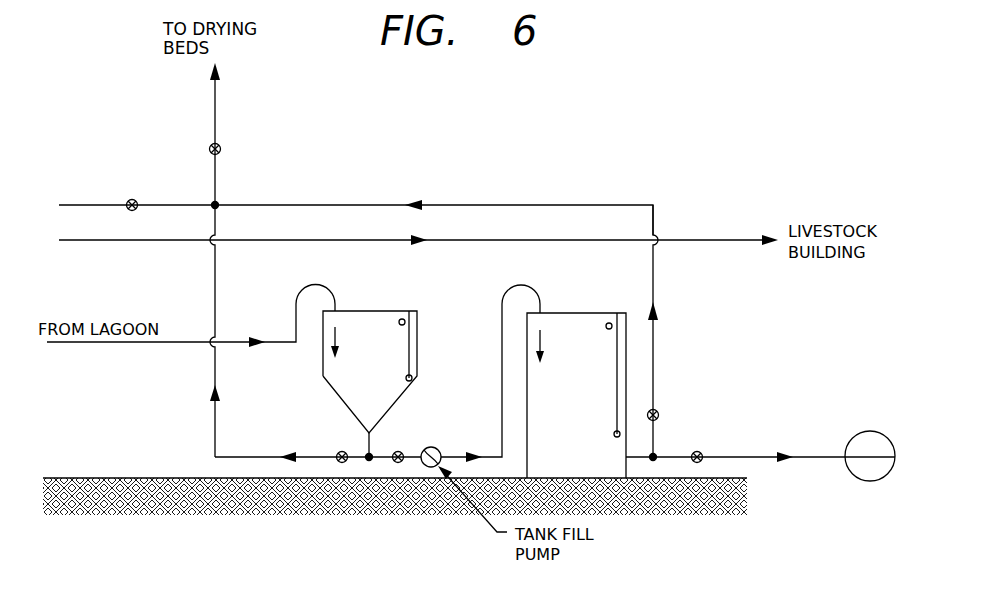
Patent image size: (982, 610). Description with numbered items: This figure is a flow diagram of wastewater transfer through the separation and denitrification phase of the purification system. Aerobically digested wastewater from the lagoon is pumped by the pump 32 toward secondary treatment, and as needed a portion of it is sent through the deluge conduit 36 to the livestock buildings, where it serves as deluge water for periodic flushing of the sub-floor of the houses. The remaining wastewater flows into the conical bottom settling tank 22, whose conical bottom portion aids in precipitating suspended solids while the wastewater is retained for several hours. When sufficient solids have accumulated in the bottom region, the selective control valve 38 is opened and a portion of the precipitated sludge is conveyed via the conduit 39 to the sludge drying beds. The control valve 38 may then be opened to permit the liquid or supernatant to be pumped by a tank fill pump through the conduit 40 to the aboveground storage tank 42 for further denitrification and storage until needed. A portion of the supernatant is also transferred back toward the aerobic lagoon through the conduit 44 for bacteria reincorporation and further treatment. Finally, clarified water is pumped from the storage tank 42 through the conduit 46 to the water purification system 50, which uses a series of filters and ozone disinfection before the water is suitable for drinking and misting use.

The conical bottom settling tank 22 is at (388, 379).
The pump 32 is at (120, 342).
The deluge conduit 36 is at (477, 241).
The selective control valve 38 is at (342, 463).
The conduit 39 is at (215, 297).
The conduit 40 is at (502, 432).
The aboveground storage tank 42 is at (597, 415).
The conduit 44 is at (353, 206).
The conduit 46 is at (722, 457).
The water purification system 50 is at (840, 418).